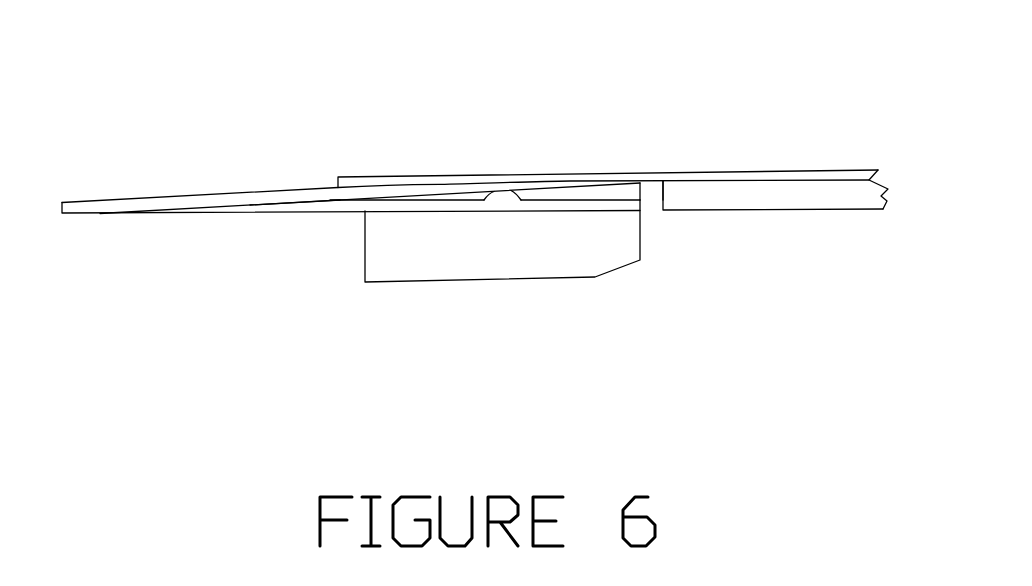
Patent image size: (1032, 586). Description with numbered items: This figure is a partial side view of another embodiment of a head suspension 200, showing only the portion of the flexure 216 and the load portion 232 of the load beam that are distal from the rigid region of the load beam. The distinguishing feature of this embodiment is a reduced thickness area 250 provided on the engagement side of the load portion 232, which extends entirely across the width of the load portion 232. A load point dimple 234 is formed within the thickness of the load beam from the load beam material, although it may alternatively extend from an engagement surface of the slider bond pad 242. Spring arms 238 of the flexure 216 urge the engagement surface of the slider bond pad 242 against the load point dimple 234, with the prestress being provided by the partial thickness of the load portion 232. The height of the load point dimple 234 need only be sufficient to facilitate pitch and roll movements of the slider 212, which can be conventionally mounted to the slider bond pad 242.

The head suspension 200 is at (557, 112).
The spring arms 238 is at (293, 195).
The flexure 216 is at (152, 203).
The slider bond pad 242 is at (298, 209).
The slider 212 is at (410, 243).
The load point dimple 234 is at (500, 189).
The load portion 232 is at (753, 188).
The reduced thickness area 250 is at (647, 188).